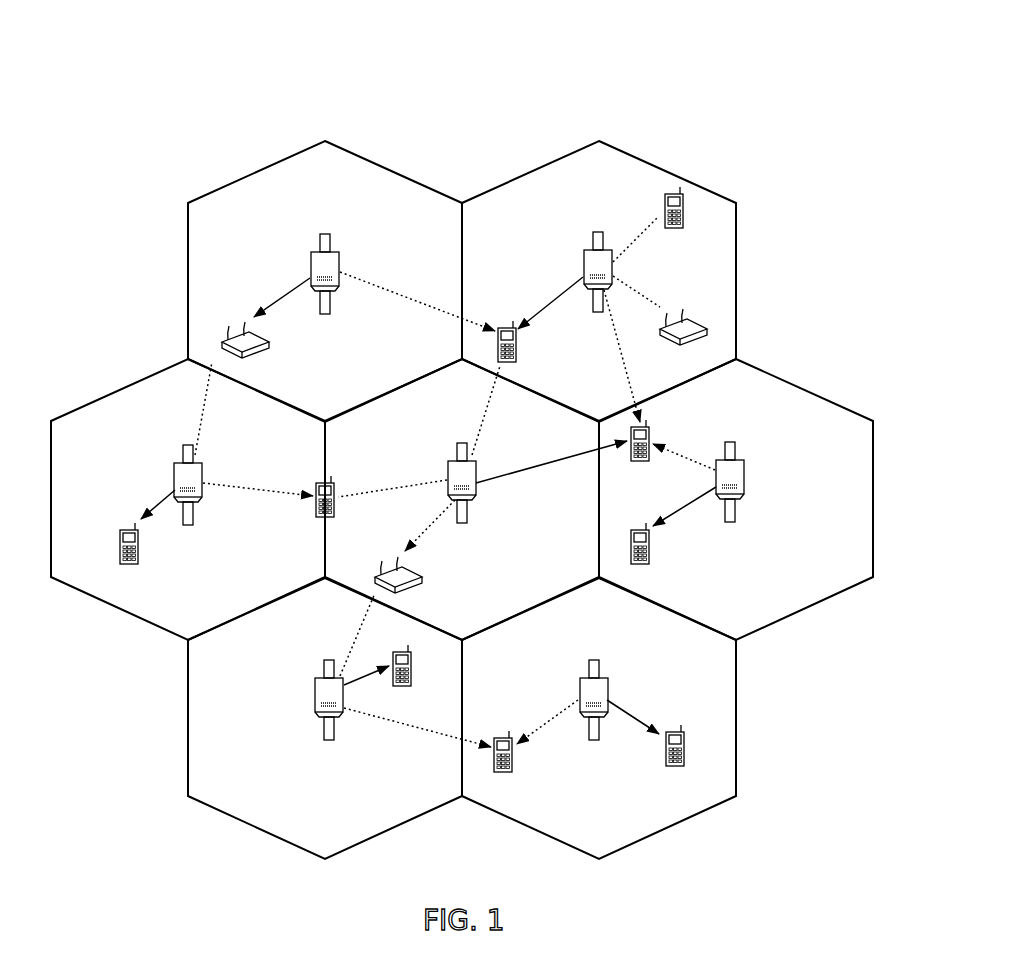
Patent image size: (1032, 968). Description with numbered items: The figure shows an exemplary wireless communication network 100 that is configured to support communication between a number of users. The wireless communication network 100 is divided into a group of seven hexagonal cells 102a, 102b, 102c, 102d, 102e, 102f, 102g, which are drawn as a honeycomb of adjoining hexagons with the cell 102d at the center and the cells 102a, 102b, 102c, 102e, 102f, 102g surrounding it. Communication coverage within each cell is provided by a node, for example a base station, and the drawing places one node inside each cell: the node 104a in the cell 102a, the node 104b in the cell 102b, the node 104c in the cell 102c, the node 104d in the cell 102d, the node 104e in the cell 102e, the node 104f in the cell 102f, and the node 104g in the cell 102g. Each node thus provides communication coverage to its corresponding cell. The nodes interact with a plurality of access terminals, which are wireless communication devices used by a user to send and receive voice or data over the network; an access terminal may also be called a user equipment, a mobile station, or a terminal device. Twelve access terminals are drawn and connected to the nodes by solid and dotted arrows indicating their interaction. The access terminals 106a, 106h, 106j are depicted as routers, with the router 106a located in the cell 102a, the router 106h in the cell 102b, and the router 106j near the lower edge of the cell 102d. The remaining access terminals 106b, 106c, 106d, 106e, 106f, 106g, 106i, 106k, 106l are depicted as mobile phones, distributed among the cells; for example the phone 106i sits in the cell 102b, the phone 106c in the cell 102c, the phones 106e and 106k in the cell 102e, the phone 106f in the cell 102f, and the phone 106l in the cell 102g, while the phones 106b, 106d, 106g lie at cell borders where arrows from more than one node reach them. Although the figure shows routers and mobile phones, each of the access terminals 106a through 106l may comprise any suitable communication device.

The wireless communication network 100 is at (752, 62).
The cell 102a is at (279, 167).
The cell 102b is at (648, 165).
The cell 102c is at (122, 389).
The cell 102d is at (487, 395).
The cell 102e is at (810, 389).
The cell 102f is at (188, 721).
The cell 102g is at (736, 721).
The node 104a is at (311, 255).
The node 104b is at (583, 255).
The node 104c is at (174, 467).
The node 104d is at (446, 465).
The node 104e is at (744, 467).
The node 104f is at (316, 683).
The node 104g is at (580, 683).
The access terminal 106a is at (266, 343).
The access terminal 106b is at (502, 325).
The access terminal 106c is at (120, 546).
The access terminal 106d is at (316, 488).
The access terminal 106e is at (650, 442).
The access terminal 106f is at (395, 655).
The access terminal 106g is at (498, 737).
The access terminal 106h is at (705, 327).
The access terminal 106i is at (665, 201).
The access terminal 106j is at (420, 578).
The access terminal 106k is at (632, 527).
The access terminal 106l is at (668, 730).